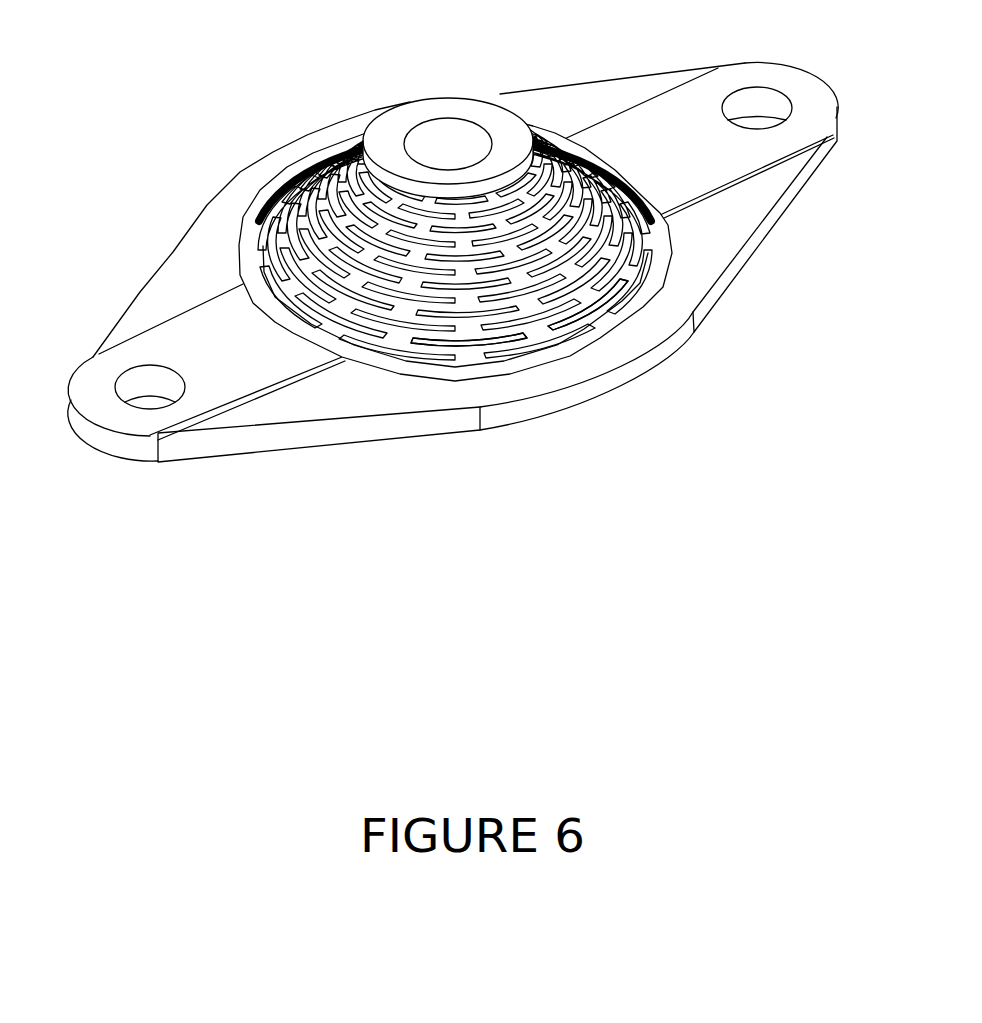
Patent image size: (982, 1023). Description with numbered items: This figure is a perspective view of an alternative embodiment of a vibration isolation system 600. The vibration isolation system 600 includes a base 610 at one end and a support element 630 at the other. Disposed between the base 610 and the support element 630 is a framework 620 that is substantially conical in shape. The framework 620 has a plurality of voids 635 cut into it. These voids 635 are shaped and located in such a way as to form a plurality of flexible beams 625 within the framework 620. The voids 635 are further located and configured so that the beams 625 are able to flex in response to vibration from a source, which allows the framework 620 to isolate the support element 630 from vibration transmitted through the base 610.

The vibration isolation system 600 is at (352, 443).
The base 610 is at (150, 278).
The framework 620 is at (327, 205).
The flexible beams 625 is at (489, 335).
The support element 630 is at (459, 101).
The voids 635 is at (603, 297).